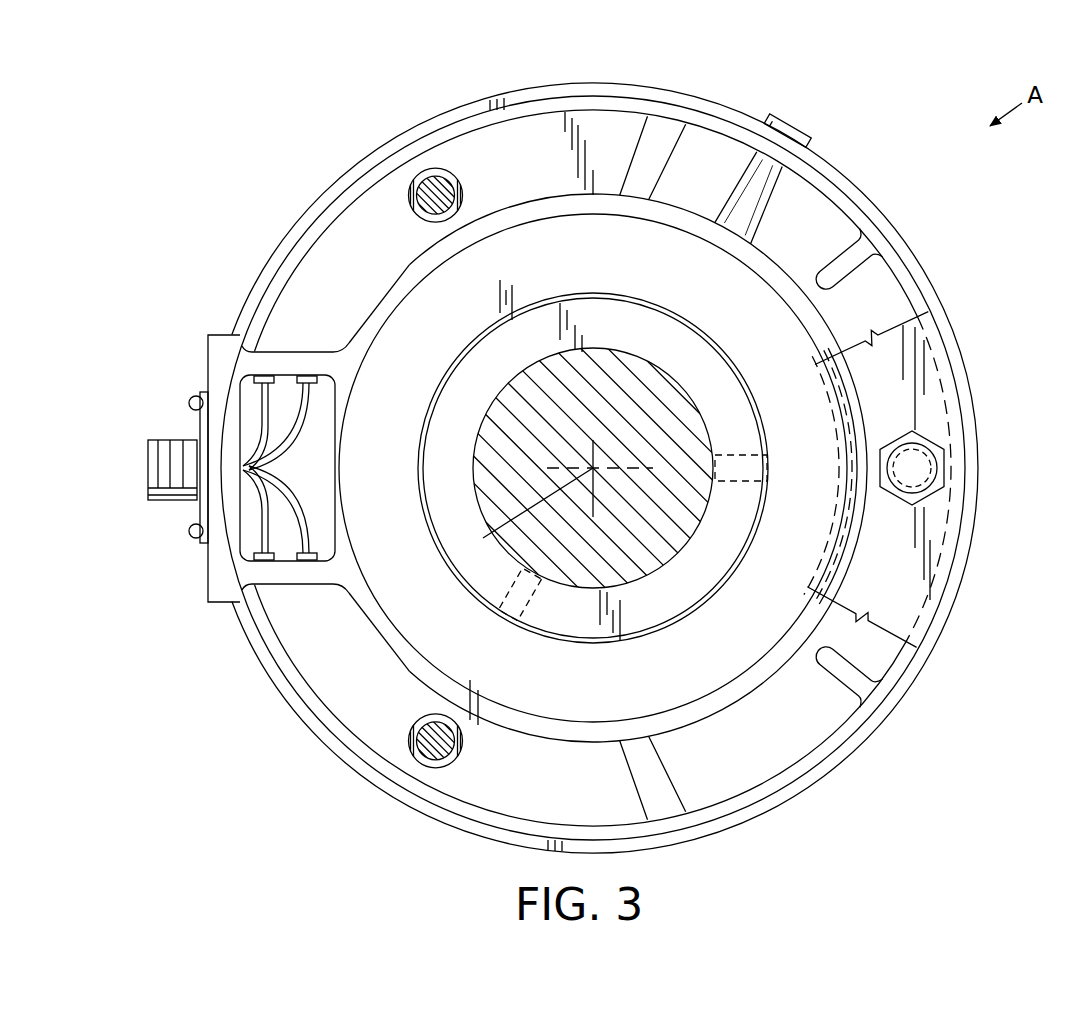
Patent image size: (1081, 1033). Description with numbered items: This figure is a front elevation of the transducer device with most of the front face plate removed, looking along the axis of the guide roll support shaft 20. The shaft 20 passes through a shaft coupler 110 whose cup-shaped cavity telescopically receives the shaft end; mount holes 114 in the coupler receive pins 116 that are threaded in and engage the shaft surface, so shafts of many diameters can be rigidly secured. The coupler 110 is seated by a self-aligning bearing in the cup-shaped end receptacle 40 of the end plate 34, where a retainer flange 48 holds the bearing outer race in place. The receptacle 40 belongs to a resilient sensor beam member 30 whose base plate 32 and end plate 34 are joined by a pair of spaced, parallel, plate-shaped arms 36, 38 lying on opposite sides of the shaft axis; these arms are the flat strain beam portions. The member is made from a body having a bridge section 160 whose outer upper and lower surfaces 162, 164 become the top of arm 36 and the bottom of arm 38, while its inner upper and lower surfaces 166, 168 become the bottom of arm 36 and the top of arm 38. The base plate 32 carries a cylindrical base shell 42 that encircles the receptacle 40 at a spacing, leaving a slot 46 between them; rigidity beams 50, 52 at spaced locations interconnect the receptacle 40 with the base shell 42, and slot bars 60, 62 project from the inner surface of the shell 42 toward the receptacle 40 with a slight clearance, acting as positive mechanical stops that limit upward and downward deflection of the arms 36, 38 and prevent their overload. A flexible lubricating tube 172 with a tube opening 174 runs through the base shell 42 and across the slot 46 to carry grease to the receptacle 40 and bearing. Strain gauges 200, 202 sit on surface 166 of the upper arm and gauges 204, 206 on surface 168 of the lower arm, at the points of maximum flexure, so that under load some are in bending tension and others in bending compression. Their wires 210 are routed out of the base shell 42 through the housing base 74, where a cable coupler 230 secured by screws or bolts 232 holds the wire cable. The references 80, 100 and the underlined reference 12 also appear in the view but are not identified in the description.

The motor assembly 12 is at (942, 710).
The shaft 20 is at (660, 395).
The sensor beam member 30 is at (383, 278).
The base plate 32 is at (232, 433).
The end plate 34 is at (340, 428).
The arm 36 is at (290, 362).
The arm 38 is at (292, 580).
The cup-shaped end receptacle 40 is at (555, 240).
The base shell 42 is at (355, 190).
The slot 46 is at (472, 145).
The retainer flange 48 is at (622, 650).
The rigidity beam 50 is at (650, 786).
The rigidity beam 52 is at (652, 150).
The slot bar 60 is at (835, 265).
The slot bar 62 is at (832, 692).
The housing base 74 is at (215, 590).
The sectioned portion 80 is at (905, 590).
The fastener 100 is at (432, 190).
The shaft coupler 110 is at (662, 622).
The mount holes 114 is at (762, 462).
The pins 116 is at (735, 486).
The bridge section 160 is at (327, 592).
The outer upper surface 162 is at (300, 348).
The outer lower surface 164 is at (302, 592).
The inner upper surface 166 is at (306, 393).
The inner lower surface 168 is at (306, 545).
The lubricating tube 172 is at (763, 195).
The tube opening 174 is at (805, 135).
The strain gauge 200 is at (258, 376).
The strain gauge 202 is at (316, 376).
The strain gauge 204 is at (318, 558).
The strain gauge 206 is at (265, 561).
The wires 210 is at (267, 502).
The cable coupler 230 is at (160, 492).
The screws or bolts 232 is at (194, 534).